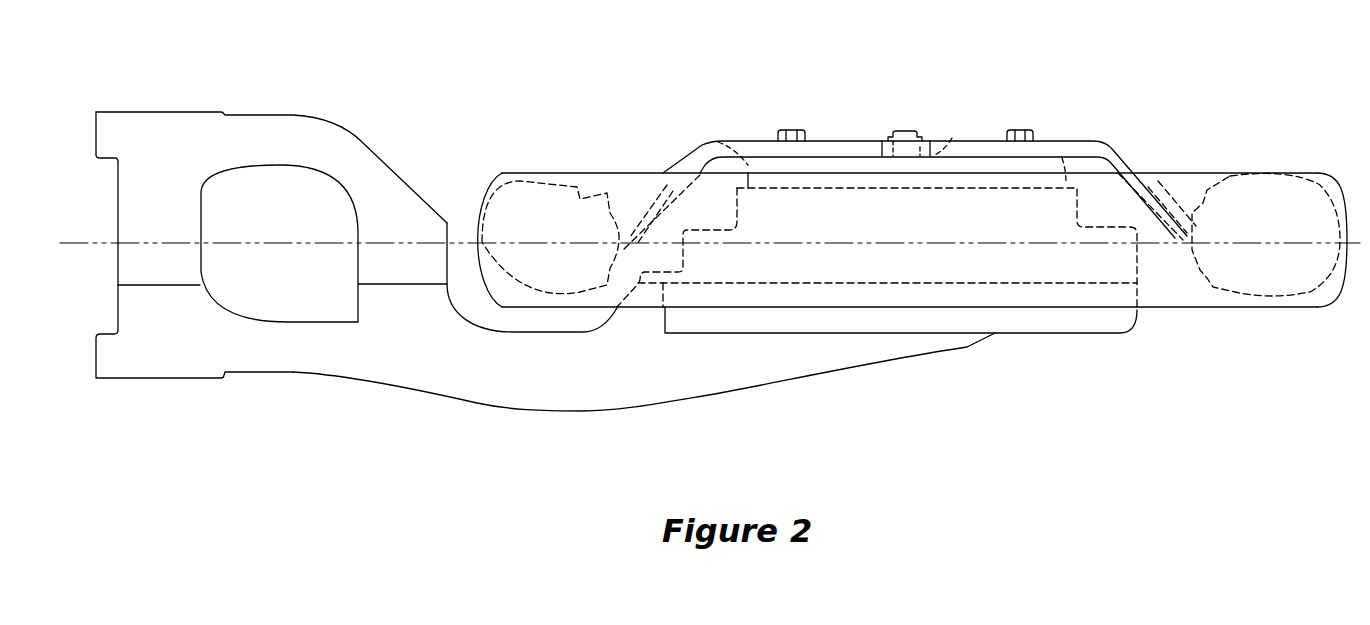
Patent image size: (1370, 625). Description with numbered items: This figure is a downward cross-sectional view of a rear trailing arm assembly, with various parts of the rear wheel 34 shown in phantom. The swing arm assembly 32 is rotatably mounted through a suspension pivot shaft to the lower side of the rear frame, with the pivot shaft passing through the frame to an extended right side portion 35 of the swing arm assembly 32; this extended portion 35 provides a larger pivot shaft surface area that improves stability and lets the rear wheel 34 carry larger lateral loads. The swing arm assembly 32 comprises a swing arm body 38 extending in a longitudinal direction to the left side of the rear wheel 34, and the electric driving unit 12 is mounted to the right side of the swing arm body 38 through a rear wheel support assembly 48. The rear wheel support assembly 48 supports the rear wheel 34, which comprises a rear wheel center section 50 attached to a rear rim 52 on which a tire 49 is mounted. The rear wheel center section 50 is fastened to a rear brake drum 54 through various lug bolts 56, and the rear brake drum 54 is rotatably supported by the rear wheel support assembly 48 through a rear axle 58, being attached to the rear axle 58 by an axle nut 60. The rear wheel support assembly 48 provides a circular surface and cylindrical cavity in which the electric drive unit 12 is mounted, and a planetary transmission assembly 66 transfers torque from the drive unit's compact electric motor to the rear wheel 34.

The electric driving unit 12 is at (1022, 262).
The swing arm assembly 32 is at (510, 410).
The rear wheel 34 is at (1333, 297).
The extended right side portion 35 is at (245, 113).
The swing arm body 38 is at (407, 365).
The rear wheel support assembly 48 is at (1012, 323).
The tire 49 is at (1270, 200).
The rear wheel center section 50 is at (1127, 153).
The rear rim 52 is at (1198, 277).
The rear brake drum 54 is at (718, 142).
The lug bolts 56 is at (788, 130).
The rear axle 58 is at (902, 130).
The axle nut 60 is at (952, 138).
The planetary transmission assembly 66 is at (1095, 200).